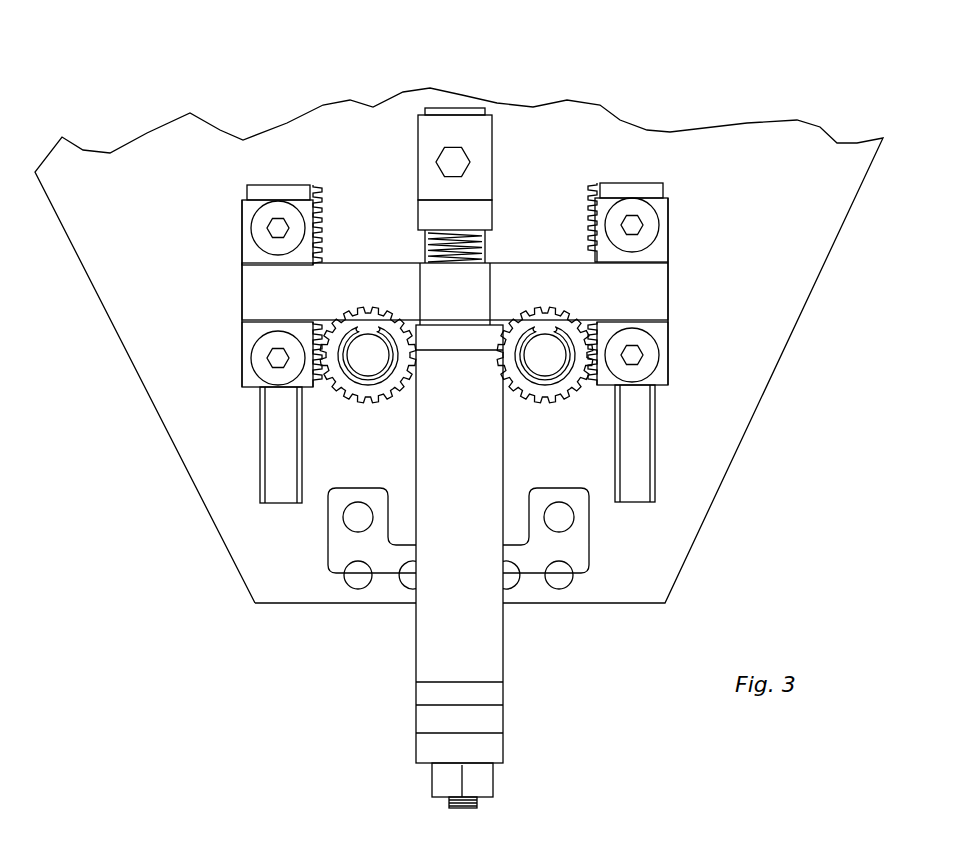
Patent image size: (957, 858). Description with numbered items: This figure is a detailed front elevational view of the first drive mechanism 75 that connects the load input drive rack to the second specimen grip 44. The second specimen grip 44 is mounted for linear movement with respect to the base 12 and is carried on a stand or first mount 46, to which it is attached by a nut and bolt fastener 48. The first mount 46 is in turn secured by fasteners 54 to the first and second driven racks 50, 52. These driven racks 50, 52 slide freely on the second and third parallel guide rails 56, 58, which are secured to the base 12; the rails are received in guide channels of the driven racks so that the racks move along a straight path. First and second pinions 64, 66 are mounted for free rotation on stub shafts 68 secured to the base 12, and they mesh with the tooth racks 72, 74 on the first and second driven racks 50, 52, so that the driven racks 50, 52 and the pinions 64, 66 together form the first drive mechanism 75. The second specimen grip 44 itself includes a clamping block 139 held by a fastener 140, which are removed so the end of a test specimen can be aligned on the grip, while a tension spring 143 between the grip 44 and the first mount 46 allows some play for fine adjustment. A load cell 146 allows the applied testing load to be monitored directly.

The base 12 is at (732, 160).
The second specimen grip 44 is at (475, 218).
The first mount 46 is at (270, 303).
The nut and bolt fastener 48 is at (490, 773).
The first driven rack 50 is at (272, 190).
The second driven rack 52 is at (650, 192).
The fasteners 54 is at (257, 230).
The second guide rail 56 is at (278, 470).
The third guide rail 58 is at (645, 440).
The first pinion 64 is at (378, 395).
The second pinion 66 is at (547, 405).
The stub shafts 68 is at (368, 363).
The tooth rack 72 is at (323, 205).
The tooth rack 74 is at (590, 226).
The first drive mechanism 75 is at (389, 165).
The clamping block 139 is at (477, 130).
The fastener 140 is at (450, 157).
The tension spring 143 is at (432, 248).
The load cell 146 is at (490, 717).